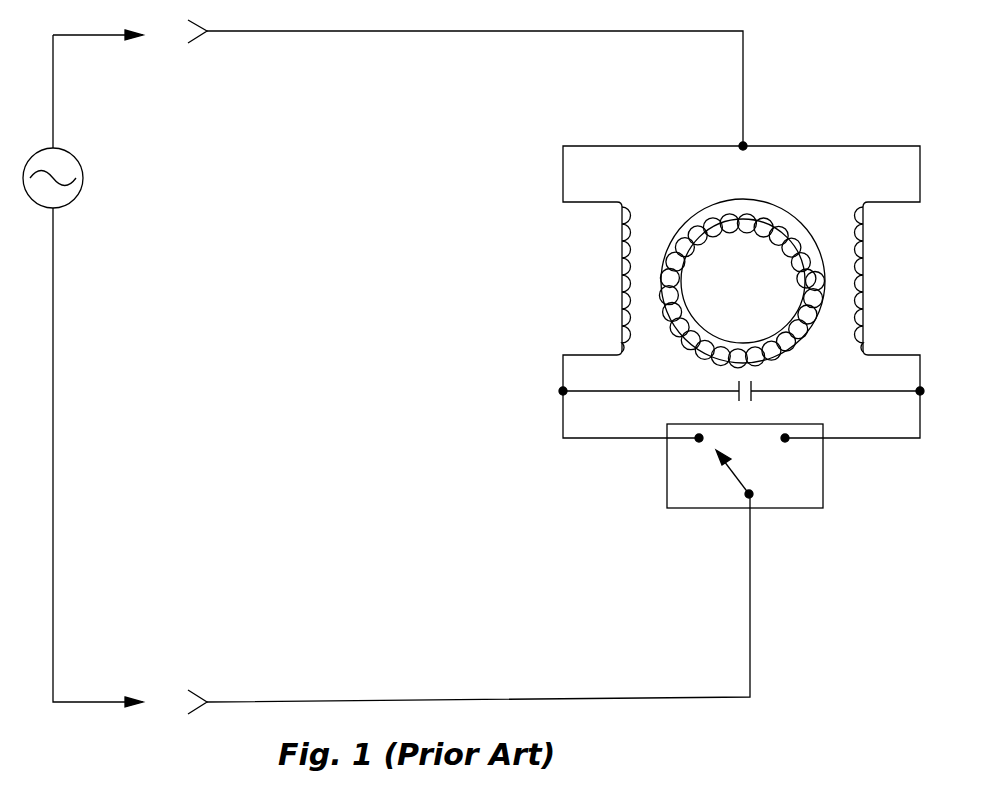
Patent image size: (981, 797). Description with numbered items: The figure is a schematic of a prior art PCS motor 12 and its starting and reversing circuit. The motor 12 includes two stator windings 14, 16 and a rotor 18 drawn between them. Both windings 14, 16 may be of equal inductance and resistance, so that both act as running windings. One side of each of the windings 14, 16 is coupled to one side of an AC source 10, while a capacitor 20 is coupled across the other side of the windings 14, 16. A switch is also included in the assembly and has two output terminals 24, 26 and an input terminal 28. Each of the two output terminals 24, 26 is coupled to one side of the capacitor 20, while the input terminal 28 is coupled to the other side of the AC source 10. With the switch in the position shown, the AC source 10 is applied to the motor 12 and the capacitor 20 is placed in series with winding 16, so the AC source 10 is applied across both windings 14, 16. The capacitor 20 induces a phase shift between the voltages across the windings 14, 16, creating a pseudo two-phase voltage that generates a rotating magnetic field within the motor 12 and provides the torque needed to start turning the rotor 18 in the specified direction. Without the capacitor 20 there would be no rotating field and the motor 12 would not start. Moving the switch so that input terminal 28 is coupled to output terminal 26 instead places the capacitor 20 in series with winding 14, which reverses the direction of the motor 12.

The AC source 10 is at (100, 178).
The PCS motor 12 is at (846, 136).
The stator winding 14 is at (578, 279).
The stator winding 16 is at (909, 279).
The rotor 18 is at (744, 257).
The capacitor 20 is at (741, 377).
The output terminal 24 is at (652, 426).
The output terminal 26 is at (794, 427).
The input terminal 28 is at (725, 510).